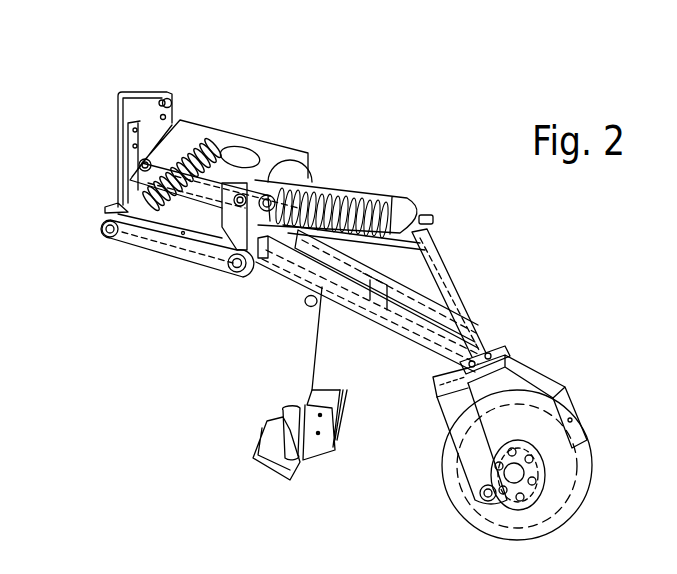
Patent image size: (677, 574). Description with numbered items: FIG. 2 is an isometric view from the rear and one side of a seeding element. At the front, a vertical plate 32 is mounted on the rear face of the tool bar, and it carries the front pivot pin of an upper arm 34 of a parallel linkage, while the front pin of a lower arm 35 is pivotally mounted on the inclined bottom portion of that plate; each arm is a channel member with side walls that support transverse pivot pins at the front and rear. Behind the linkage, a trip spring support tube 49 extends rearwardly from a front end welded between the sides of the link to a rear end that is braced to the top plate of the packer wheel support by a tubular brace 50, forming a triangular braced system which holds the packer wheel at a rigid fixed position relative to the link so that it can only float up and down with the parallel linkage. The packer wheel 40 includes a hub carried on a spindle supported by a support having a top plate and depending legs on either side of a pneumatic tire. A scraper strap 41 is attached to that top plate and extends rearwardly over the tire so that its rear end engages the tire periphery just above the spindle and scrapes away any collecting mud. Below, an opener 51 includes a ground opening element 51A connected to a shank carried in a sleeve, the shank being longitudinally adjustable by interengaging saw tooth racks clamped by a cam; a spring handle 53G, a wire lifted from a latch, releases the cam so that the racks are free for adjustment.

The vertical plate 32 is at (152, 115).
The upper arm 34 is at (192, 133).
The lower arm 35 is at (163, 246).
The trip spring support tube 49 is at (393, 187).
The tubular brace 50 is at (453, 300).
The scraper strap 41 is at (533, 372).
The packer wheel 40 is at (570, 488).
The opener 51 is at (340, 358).
The ground opening element 51A is at (283, 468).
The spring handle 53G is at (317, 308).